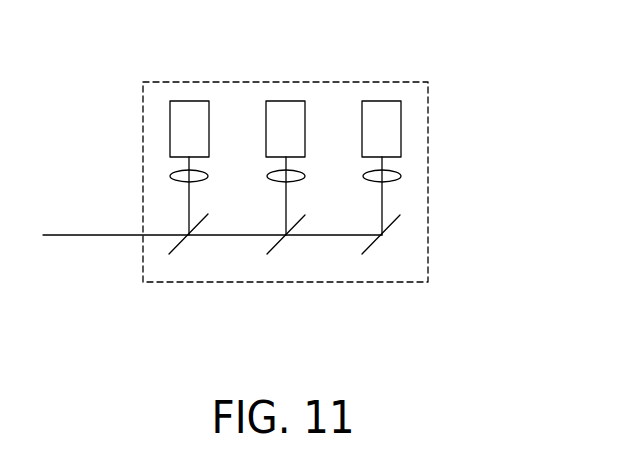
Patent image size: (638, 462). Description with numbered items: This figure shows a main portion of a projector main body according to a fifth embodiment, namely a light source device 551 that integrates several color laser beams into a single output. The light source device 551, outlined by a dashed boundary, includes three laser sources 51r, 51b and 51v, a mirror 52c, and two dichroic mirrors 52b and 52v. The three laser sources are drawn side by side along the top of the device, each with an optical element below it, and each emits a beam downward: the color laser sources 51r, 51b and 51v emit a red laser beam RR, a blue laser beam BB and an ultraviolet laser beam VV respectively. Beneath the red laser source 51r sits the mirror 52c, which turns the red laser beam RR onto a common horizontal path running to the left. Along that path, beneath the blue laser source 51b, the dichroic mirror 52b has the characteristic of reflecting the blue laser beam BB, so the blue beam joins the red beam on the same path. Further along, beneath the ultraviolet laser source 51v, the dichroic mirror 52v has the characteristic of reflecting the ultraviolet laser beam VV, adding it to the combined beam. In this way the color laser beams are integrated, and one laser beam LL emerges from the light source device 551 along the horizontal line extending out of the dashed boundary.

The light source device 551 is at (428, 143).
The laser source 51v is at (192, 117).
The laser source 51b is at (287, 117).
The laser source 51r is at (381, 117).
The dichroic mirror 52v is at (182, 245).
The dichroic mirror 52b is at (278, 243).
The mirror 52c is at (390, 227).
The ultraviolet laser beam VV is at (186, 200).
The blue laser beam BB is at (285, 213).
The red laser beam RR is at (383, 200).
The laser beam LL is at (80, 236).